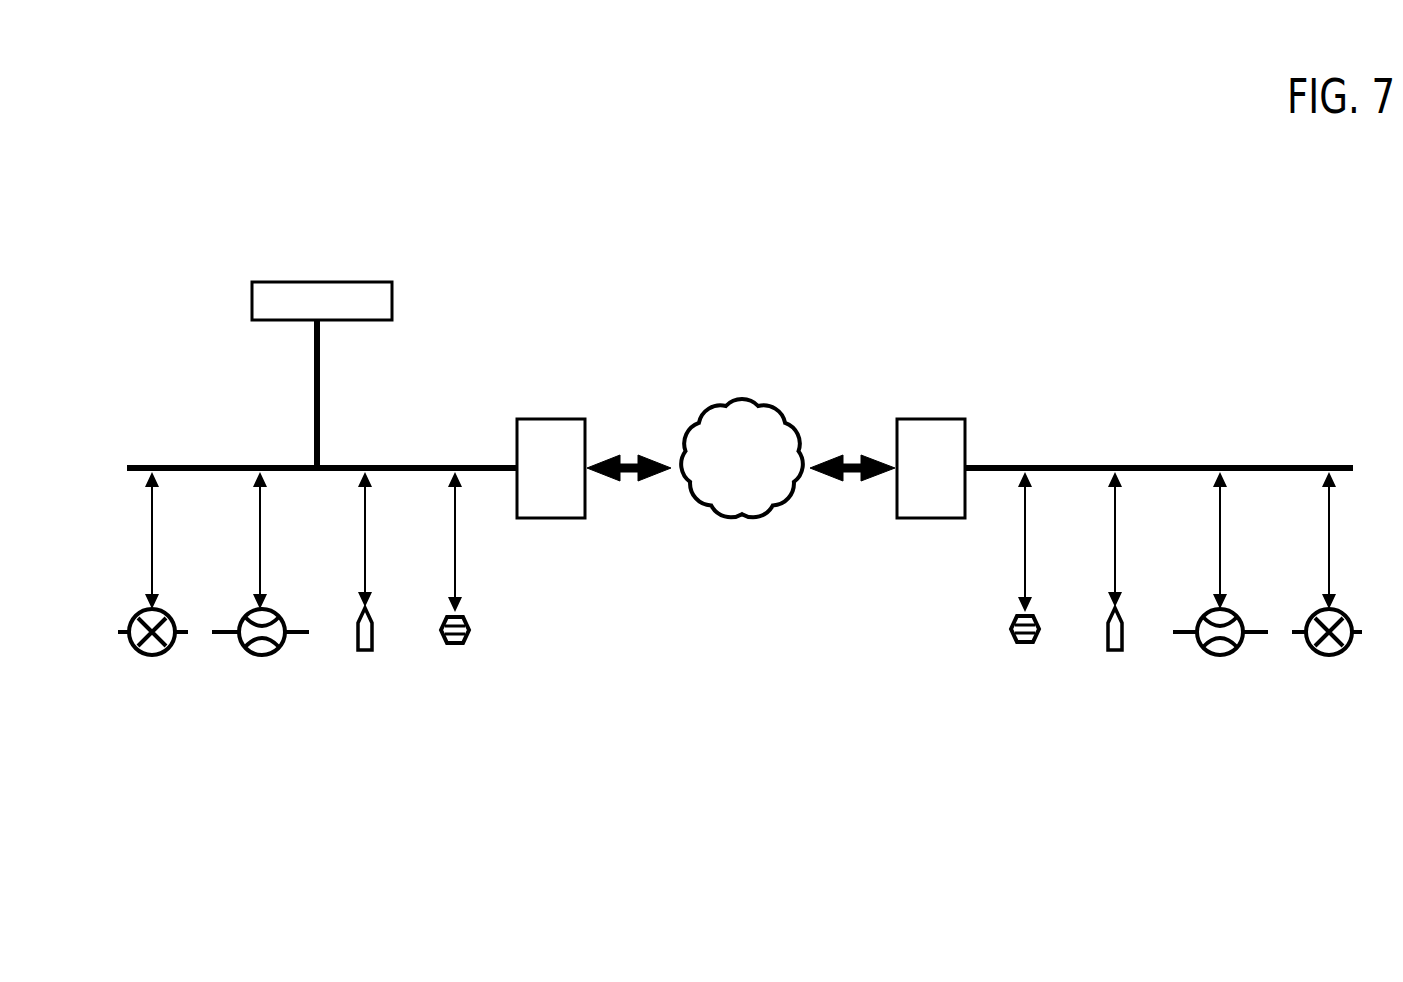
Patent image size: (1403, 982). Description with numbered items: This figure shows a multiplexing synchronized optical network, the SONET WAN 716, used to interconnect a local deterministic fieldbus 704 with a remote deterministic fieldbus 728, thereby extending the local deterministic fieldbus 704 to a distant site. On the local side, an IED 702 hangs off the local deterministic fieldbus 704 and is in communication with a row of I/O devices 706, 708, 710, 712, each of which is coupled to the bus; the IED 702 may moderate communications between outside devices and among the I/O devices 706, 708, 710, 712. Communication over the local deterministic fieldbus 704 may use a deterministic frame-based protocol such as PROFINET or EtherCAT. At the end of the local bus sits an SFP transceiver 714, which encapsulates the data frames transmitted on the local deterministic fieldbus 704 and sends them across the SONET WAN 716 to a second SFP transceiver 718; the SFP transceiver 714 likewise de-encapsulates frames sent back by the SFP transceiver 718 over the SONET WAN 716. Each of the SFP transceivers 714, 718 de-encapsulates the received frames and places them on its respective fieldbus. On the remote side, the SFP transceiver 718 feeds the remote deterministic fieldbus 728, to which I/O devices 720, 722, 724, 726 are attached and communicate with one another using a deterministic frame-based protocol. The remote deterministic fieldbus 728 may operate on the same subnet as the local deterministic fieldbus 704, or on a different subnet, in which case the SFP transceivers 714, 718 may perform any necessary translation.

The IED 702 is at (320, 282).
The local deterministic fieldbus 704 is at (318, 440).
The I/O device 706 is at (152, 655).
The I/O device 708 is at (262, 655).
The I/O device 710 is at (365, 650).
The I/O device 712 is at (455, 645).
The SFP transceiver 714 is at (551, 419).
The SONET WAN 716 is at (742, 396).
The SFP transceiver 718 is at (930, 419).
The I/O device 720 is at (1025, 645).
The I/O device 722 is at (1115, 650).
The I/O device 724 is at (1220, 655).
The I/O device 726 is at (1329, 655).
The remote deterministic fieldbus 728 is at (1160, 465).